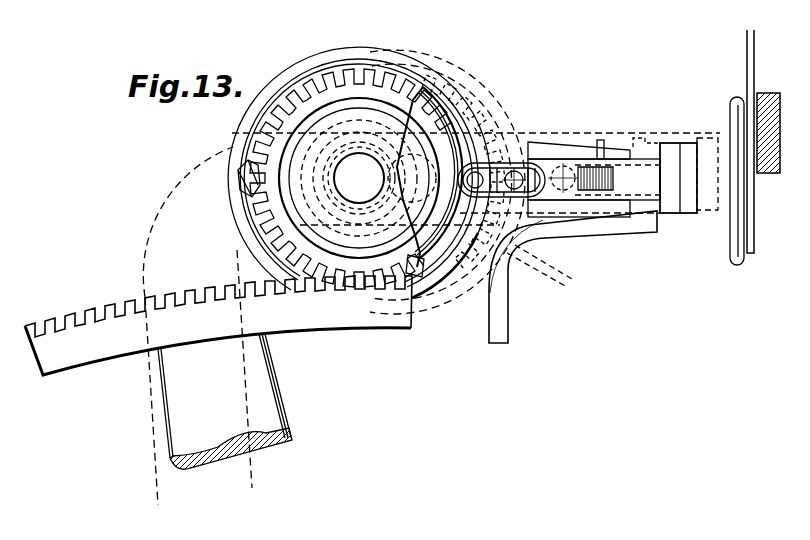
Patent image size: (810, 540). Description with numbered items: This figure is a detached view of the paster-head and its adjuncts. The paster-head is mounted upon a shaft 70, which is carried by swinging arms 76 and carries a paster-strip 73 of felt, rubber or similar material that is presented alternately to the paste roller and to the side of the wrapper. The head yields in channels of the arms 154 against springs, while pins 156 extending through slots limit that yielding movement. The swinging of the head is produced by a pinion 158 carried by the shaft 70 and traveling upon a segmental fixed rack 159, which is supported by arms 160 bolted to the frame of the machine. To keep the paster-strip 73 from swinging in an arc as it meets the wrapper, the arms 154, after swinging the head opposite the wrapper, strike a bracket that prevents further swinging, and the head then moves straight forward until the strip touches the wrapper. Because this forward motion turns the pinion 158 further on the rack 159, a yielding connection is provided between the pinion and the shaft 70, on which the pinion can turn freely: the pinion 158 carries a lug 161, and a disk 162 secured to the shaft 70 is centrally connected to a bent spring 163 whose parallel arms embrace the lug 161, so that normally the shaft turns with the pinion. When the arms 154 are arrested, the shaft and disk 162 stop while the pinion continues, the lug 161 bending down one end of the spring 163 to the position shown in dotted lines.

The shaft 70 is at (359, 178).
The paster-strip 73 is at (677, 143).
The swinging arms 76 is at (245, 412).
The arms 154 is at (558, 150).
The pins 156 is at (604, 140).
The pinion 158 is at (312, 100).
The segmental fixed rack 159 is at (218, 325).
The arms 160 is at (631, 222).
The lug 161 is at (472, 165).
The disk 162 is at (374, 50).
The bent spring 163 is at (258, 146).